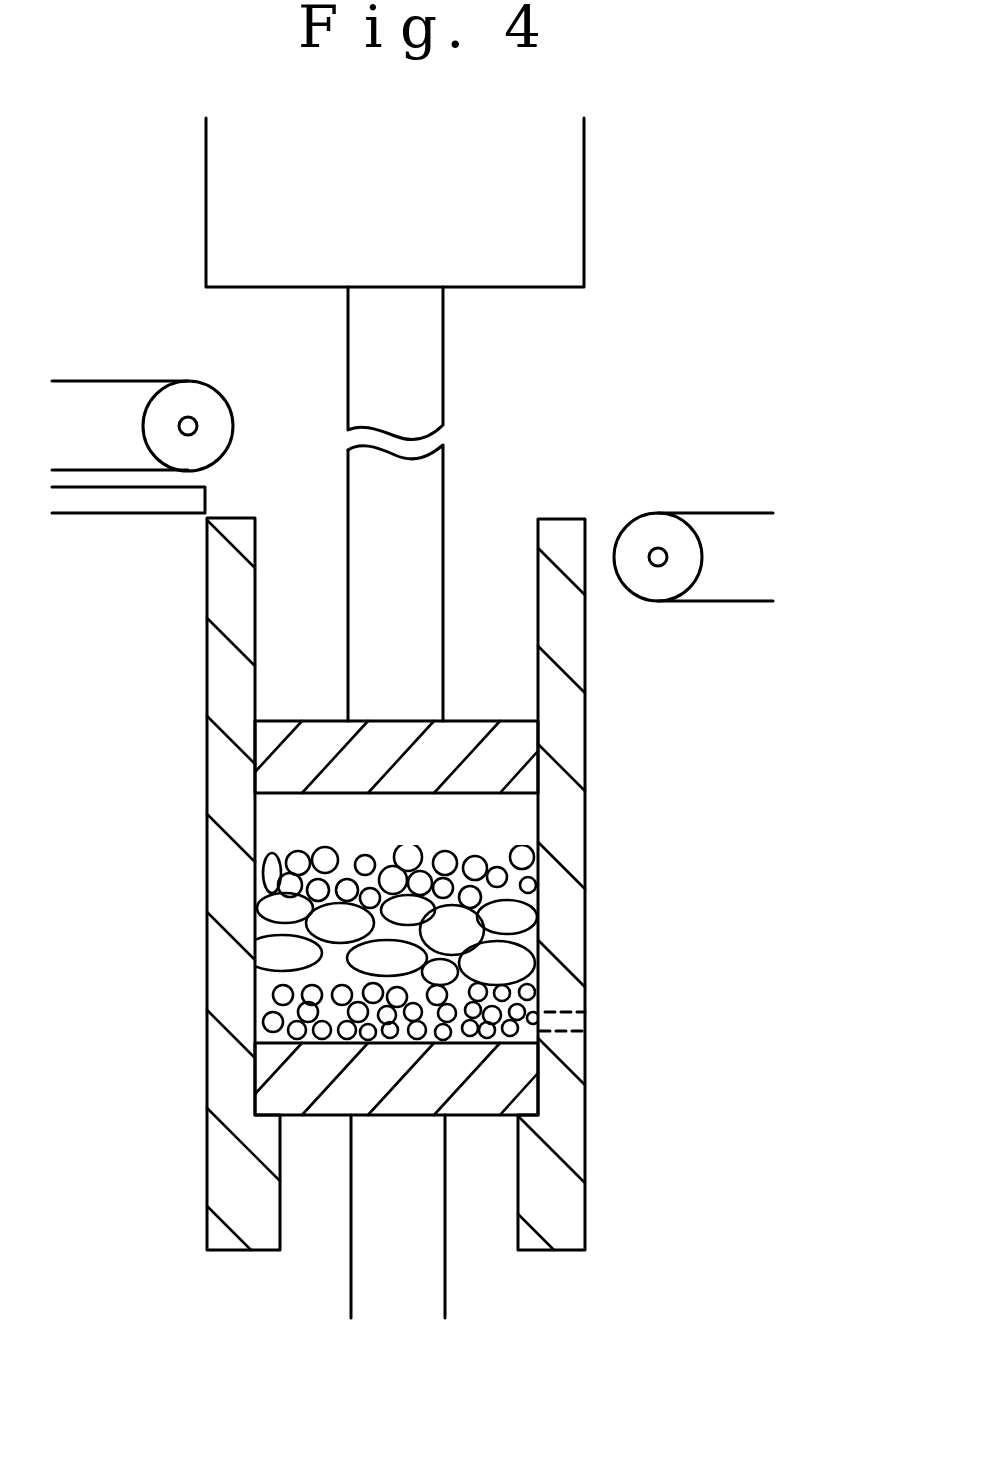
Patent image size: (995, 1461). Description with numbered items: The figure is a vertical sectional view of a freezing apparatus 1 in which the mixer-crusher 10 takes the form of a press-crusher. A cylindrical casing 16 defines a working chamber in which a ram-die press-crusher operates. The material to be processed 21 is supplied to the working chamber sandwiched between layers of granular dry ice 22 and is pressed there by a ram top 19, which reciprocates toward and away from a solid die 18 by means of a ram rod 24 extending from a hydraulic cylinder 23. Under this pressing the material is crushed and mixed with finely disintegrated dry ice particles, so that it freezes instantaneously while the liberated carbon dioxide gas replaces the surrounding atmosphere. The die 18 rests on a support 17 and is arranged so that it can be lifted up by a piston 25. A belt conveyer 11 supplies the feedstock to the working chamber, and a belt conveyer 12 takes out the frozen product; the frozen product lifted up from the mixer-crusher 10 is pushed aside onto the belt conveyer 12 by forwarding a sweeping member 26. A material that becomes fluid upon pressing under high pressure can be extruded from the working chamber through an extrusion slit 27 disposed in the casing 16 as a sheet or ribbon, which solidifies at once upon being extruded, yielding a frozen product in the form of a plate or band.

The press apparatus 1 is at (736, 185).
The hydraulic cylinder 23 is at (585, 210).
The ram rod 24 is at (433, 495).
The belt conveyer 11 is at (103, 378).
The sweeping member 26 is at (92, 515).
The belt conveyer 12 is at (705, 507).
The mixer-crusher 10 is at (590, 445).
The cylindrical casing 16 is at (588, 842).
The ram top 19 is at (280, 762).
The die 18 is at (267, 1070).
The layers of granular dry ice 22 is at (267, 997).
The material to be processed 21 is at (513, 964).
The extrusion slit 27 is at (568, 1010).
The support 17 is at (523, 1136).
The piston 25 is at (425, 1278).